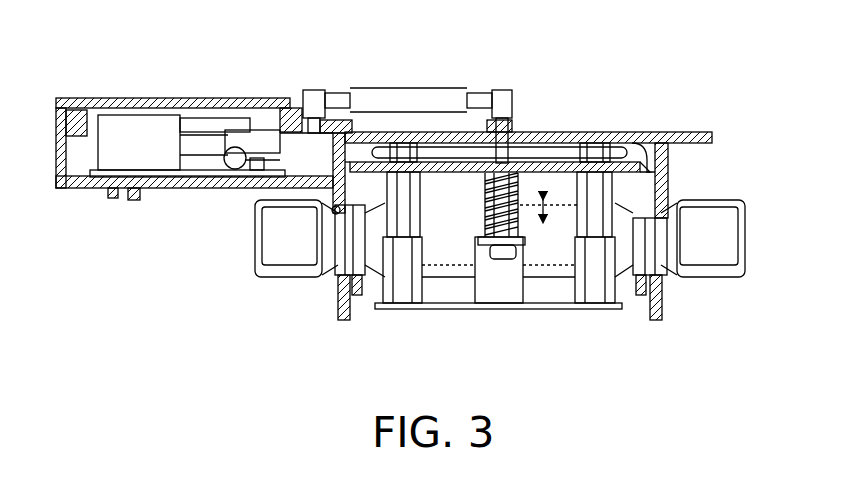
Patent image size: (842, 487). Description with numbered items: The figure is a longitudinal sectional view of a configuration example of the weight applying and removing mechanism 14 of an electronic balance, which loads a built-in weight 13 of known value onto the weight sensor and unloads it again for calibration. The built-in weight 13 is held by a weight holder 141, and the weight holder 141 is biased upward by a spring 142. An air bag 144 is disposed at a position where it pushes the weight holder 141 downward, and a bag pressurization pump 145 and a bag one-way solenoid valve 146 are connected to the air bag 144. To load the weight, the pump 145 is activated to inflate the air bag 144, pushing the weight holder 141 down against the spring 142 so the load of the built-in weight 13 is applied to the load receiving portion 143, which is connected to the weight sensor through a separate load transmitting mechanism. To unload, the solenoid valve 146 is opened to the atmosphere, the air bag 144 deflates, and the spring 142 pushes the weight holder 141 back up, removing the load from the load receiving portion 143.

The weight applying and removing mechanism 14 is at (69, 31).
The bag pressurization pump 145 is at (213, 127).
The bag one-way solenoid valve 146 is at (148, 143).
The air bag 144 is at (532, 148).
The weight holder 141 is at (643, 158).
The spring 142 is at (490, 240).
The load receiving portion 143 is at (343, 322).
The built-in weight 13 is at (273, 257).